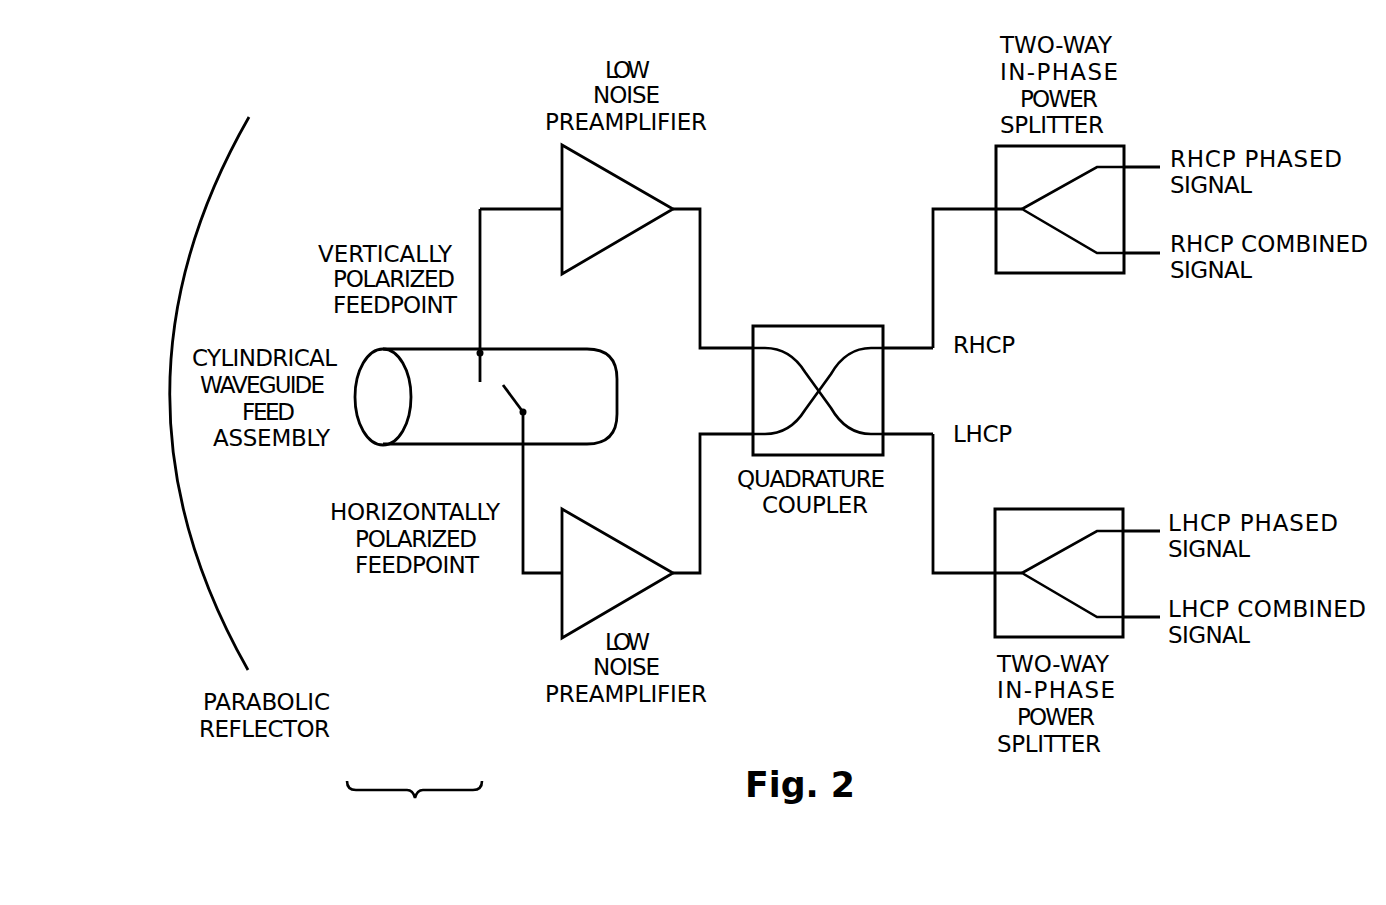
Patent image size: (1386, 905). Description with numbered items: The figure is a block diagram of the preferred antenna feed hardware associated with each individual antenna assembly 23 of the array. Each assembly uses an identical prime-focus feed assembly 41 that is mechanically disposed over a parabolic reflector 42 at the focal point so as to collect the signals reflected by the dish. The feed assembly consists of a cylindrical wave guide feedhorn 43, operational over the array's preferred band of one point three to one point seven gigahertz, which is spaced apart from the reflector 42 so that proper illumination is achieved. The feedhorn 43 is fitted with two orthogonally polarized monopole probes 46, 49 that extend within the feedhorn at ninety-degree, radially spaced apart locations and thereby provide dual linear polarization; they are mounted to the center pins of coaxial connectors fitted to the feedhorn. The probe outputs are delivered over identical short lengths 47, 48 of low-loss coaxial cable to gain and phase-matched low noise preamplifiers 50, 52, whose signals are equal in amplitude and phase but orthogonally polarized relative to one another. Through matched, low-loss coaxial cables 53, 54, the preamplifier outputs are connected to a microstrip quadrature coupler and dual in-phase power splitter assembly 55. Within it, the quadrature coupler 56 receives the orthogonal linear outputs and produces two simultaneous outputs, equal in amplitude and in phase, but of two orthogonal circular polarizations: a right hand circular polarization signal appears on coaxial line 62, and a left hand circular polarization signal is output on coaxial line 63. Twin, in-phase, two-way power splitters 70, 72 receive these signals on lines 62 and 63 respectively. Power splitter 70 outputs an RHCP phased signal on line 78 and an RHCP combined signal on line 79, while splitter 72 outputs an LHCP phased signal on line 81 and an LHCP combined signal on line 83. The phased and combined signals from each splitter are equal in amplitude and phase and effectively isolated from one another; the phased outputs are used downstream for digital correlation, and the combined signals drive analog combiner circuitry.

The antenna assembly 23 is at (414, 806).
The feed assembly 41 is at (450, 203).
The parabolic reflector 42 is at (230, 633).
The cylindrical wave guide feedhorn 43 is at (408, 437).
The monopole probe 46 is at (483, 370).
The coaxial cable 47 is at (537, 575).
The coaxial cable 48 is at (508, 209).
The monopole probe 49 is at (513, 397).
The low noise amplifier 50 is at (623, 238).
The low noise amplifier 52 is at (612, 535).
The coaxial cable 53 is at (700, 209).
The coaxial cable 54 is at (715, 574).
The quadrature coupler and dual in-phase power splitter assembly 55 is at (912, 285).
The quadrature coupler 56 is at (883, 395).
The coaxial line 62 is at (960, 209).
The coaxial line 63 is at (946, 575).
The two-way power splitter 70 is at (1060, 273).
The two-way power splitter 72 is at (1060, 509).
The line 78 is at (1135, 167).
The line 79 is at (1135, 253).
The line 81 is at (1135, 531).
The line 83 is at (1135, 617).